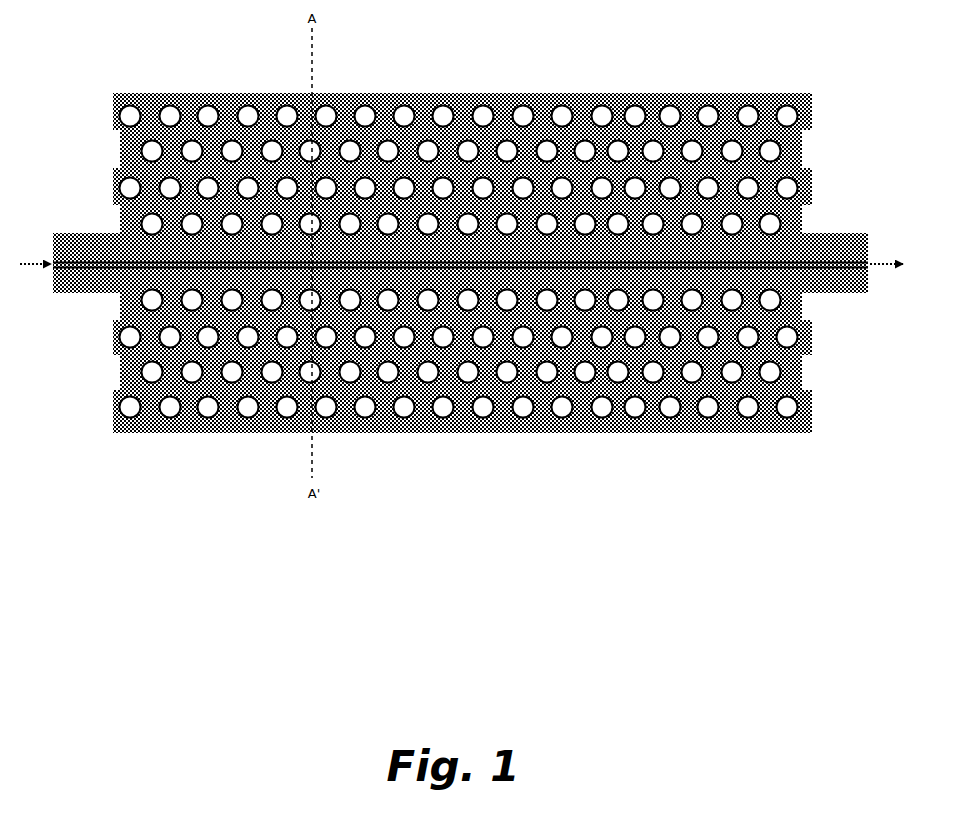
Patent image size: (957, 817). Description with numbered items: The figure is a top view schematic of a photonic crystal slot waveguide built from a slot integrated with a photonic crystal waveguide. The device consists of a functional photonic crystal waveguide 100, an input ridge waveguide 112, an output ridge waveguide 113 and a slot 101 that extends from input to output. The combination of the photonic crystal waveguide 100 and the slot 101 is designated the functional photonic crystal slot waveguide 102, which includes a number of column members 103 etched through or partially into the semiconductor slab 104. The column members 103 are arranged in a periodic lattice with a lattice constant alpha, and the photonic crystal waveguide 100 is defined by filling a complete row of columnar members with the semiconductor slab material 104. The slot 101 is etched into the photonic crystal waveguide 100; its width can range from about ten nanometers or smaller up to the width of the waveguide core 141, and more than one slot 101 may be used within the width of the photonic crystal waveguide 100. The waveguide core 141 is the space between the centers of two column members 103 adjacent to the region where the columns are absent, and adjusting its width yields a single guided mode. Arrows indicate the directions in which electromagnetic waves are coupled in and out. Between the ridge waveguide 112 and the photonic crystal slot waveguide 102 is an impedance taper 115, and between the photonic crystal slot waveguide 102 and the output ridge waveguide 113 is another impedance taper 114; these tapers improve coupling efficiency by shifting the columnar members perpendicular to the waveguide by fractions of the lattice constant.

The photonic crystal waveguide 100 is at (362, 282).
The slot 101 is at (482, 271).
The photonic crystal slot waveguide 102 is at (460, 317).
The column members 103 is at (634, 407).
The semiconductor slab 104 is at (427, 103).
The input ridge waveguide 112 is at (70, 300).
The output ridge waveguide 113 is at (848, 300).
The impedance taper 114 is at (751, 245).
The impedance taper 115 is at (179, 245).
The waveguide core 141 is at (585, 300).